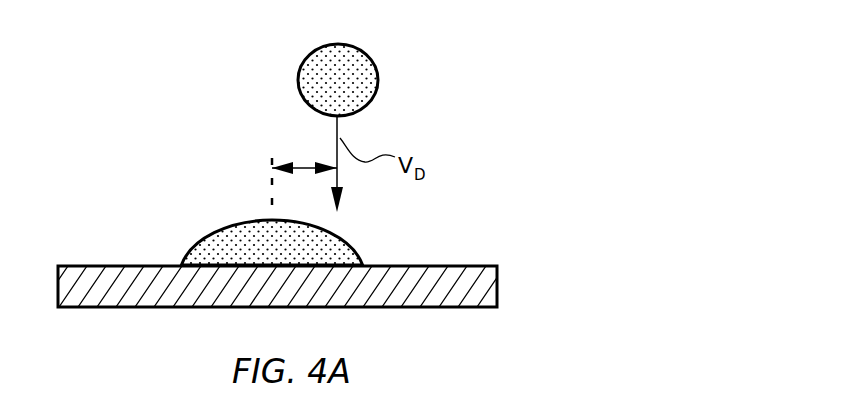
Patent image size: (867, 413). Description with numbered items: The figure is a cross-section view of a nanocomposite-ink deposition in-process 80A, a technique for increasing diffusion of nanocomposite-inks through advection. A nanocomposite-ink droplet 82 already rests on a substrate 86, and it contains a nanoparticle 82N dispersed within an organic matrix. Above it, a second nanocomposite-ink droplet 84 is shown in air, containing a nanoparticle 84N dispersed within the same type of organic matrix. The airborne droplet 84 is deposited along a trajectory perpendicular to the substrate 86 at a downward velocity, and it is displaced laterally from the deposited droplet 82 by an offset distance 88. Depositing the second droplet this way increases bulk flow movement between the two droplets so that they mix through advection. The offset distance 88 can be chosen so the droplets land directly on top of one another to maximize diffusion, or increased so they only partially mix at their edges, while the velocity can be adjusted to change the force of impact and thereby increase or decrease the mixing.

The nanocomposite-ink deposition in-process 80A is at (131, 135).
The nanocomposite-ink droplet 82 is at (177, 237).
The nanoparticle 82N is at (220, 242).
The nanocomposite-ink droplet 84 is at (403, 78).
The nanoparticle 84N is at (320, 62).
The substrate 86 is at (498, 287).
The offset distance 88 is at (302, 163).